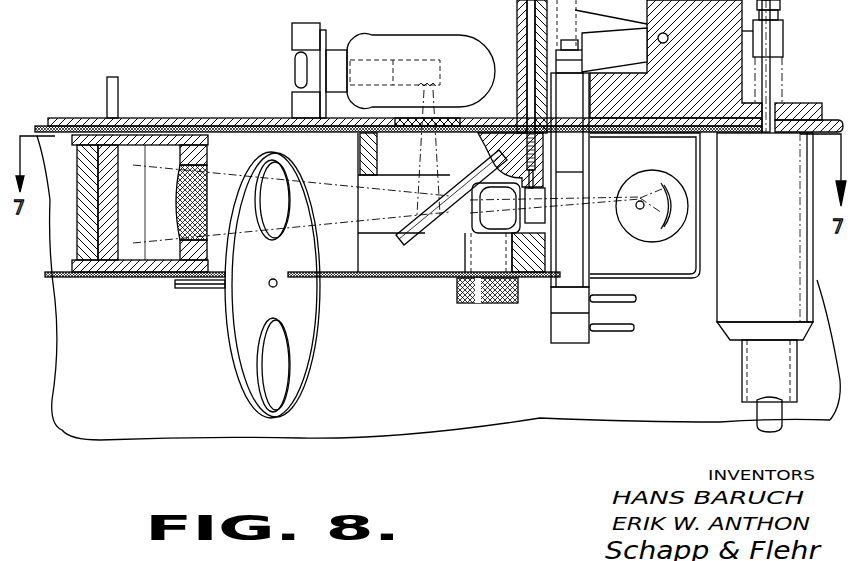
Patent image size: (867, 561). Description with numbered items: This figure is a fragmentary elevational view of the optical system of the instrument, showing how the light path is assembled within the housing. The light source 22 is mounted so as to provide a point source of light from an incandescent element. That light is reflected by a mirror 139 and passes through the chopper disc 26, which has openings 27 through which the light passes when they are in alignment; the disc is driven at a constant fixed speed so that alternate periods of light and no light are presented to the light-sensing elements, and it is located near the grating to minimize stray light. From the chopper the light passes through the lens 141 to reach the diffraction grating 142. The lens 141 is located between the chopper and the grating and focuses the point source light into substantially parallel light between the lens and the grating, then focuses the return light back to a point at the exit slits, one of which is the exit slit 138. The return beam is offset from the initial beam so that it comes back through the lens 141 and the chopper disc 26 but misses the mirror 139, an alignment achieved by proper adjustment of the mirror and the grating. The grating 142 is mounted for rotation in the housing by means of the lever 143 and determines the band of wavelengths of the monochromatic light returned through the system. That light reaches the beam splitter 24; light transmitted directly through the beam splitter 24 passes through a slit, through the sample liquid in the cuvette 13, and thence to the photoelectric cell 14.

The cuvette 13 is at (586, 252).
The photoelectric cell 14 is at (649, 244).
The light source 22 is at (427, 45).
The beam splitter 24 is at (480, 225).
The chopper disc 26 is at (312, 326).
The openings 27 is at (268, 320).
The exit slit 138 is at (538, 228).
The mirror 139 is at (407, 246).
The lens 141 is at (190, 175).
The diffraction grating 142 is at (105, 258).
The lever 143 is at (109, 95).